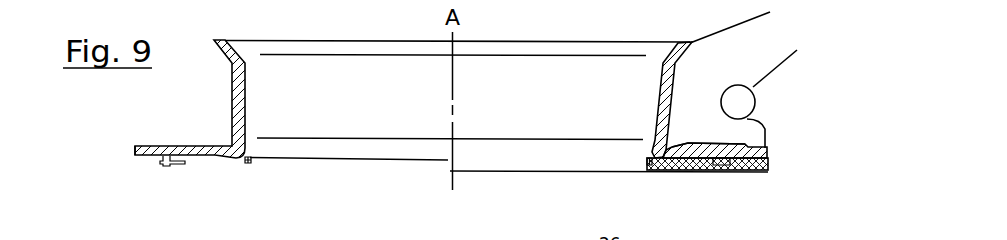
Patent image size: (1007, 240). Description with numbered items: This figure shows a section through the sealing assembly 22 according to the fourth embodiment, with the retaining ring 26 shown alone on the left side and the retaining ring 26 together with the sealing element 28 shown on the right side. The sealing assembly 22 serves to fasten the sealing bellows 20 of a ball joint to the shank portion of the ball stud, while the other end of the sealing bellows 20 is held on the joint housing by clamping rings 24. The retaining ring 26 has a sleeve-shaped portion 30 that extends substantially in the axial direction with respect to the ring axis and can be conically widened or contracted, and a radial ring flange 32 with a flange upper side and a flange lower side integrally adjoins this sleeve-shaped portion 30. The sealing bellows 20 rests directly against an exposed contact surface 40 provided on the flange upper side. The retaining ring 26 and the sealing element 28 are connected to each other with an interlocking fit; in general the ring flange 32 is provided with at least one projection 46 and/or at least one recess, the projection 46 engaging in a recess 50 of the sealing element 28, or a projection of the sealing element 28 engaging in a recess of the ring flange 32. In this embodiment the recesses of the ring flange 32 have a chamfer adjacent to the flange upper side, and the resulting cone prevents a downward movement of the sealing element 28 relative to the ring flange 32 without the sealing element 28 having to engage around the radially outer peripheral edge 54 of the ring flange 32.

The sealing bellows 20 is at (760, 65).
The sealing assembly 22 is at (562, 35).
The clamping rings 24 is at (740, 105).
The retaining ring 26 is at (228, 129).
The sealing element 28 is at (753, 167).
The sleeve-shaped portion 30 is at (660, 78).
The radial ring flange 32 is at (768, 152).
The contact surface 40 is at (684, 148).
The projection 46 is at (172, 167).
The recess 50 is at (714, 169).
The radially outer peripheral edge 54 is at (133, 152).